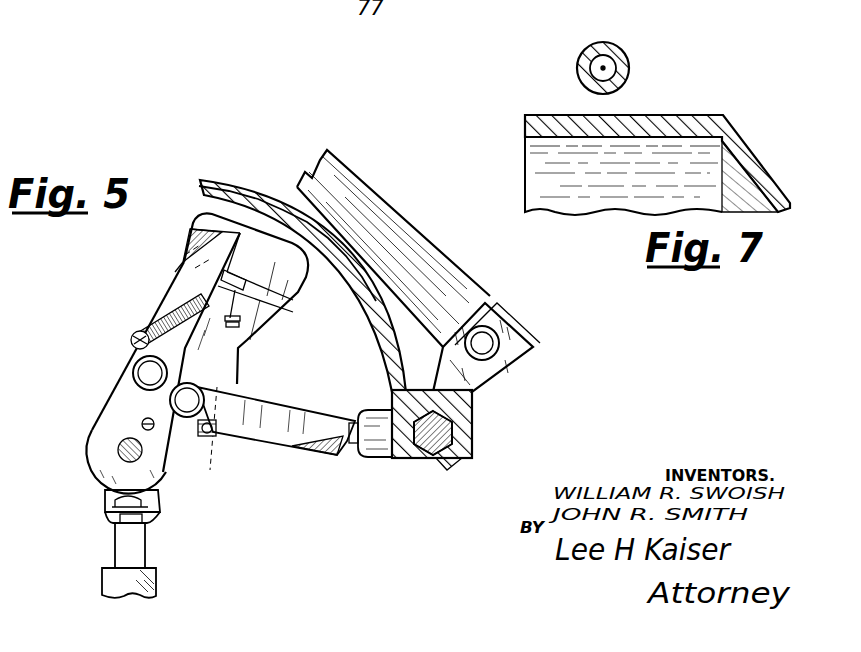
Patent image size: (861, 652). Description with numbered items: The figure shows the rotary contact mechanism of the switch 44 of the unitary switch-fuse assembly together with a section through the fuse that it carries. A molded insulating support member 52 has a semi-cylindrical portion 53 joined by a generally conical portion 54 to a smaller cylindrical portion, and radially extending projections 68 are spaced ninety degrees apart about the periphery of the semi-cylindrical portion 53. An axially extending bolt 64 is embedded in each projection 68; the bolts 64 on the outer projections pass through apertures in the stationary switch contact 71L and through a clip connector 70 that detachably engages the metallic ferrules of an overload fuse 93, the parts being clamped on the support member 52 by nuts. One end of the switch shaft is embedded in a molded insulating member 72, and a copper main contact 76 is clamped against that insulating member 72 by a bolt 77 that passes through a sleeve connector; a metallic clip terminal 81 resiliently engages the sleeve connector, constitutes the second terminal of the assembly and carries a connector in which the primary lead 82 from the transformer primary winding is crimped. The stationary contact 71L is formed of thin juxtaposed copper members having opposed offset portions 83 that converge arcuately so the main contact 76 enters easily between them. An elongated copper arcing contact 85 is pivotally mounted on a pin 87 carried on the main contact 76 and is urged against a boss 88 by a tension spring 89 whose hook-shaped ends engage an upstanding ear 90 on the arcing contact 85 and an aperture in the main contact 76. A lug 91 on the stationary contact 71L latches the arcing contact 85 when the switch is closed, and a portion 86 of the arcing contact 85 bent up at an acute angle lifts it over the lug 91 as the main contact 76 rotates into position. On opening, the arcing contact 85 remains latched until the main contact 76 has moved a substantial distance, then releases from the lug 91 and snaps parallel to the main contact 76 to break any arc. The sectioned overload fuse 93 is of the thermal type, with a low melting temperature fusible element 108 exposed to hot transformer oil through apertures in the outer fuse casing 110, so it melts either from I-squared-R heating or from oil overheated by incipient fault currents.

In FIG. 5, the switch 44 is at (86, 308).
In FIG. 5, the molded insulating support member 52 is at (205, 178).
In FIG. 7, the molded insulating support member 52 is at (722, 112).
In FIG. 5, the semi-cylindrical portion 53 is at (238, 200).
In FIG. 7, the semi-cylindrical portion 53 is at (530, 124).
In FIG. 7, the generally conical portion 54 is at (758, 168).
In FIG. 5, the axially extending bolt 64 is at (446, 438).
In FIG. 5, the radially extending projection 68 is at (456, 400).
In FIG. 5, the clip connector 70 is at (510, 314).
In FIG. 5, the stationary switch contact 71L is at (372, 463).
In FIG. 5, the molded insulating member 72 is at (152, 428).
In FIG. 5, the main contact 76 is at (108, 458).
In FIG. 5, the bolt 77 is at (117, 445).
In FIG. 5, the metallic clip terminal 81 is at (106, 496).
In FIG. 5, the primary lead 82 is at (110, 580).
In FIG. 5, the offset portion 83 is at (372, 418).
In FIG. 5, the arcing contact 85 is at (168, 357).
In FIG. 5, the bent-up portion 86 is at (197, 236).
In FIG. 5, the pin 87 is at (184, 402).
In FIG. 5, the boss 88 is at (238, 286).
In FIG. 5, the tension spring 89 is at (188, 313).
In FIG. 5, the upstanding ear 90 is at (131, 339).
In FIG. 5, the lug 91 is at (354, 442).
In FIG. 5, the overload fuse 93 is at (392, 244).
In FIG. 7, the overload fuse 93 is at (640, 67).
In FIG. 7, the low melting temperature fusible element 108 is at (606, 66).
In FIG. 7, the outer fuse casing 110 is at (591, 44).